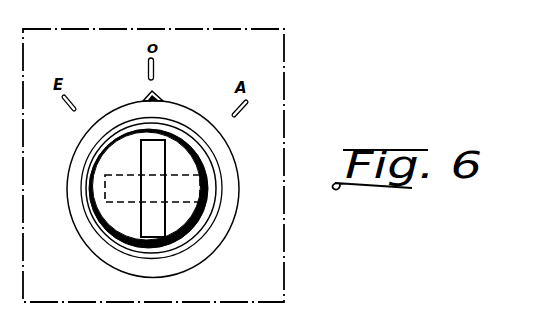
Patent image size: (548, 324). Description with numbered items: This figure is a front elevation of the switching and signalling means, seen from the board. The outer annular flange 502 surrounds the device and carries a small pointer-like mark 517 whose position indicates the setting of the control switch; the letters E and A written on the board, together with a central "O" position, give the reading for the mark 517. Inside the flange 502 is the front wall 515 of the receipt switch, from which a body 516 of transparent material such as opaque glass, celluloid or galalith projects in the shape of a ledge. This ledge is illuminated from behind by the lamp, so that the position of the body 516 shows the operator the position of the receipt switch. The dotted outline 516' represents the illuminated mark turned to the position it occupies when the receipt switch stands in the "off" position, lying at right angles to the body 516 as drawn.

The flange 502 is at (83, 141).
The front wall 515 is at (95, 158).
The body of transparent material 516 is at (207, 188).
The dotted position of the illuminated mark 516' is at (195, 202).
The mark 517 is at (158, 93).